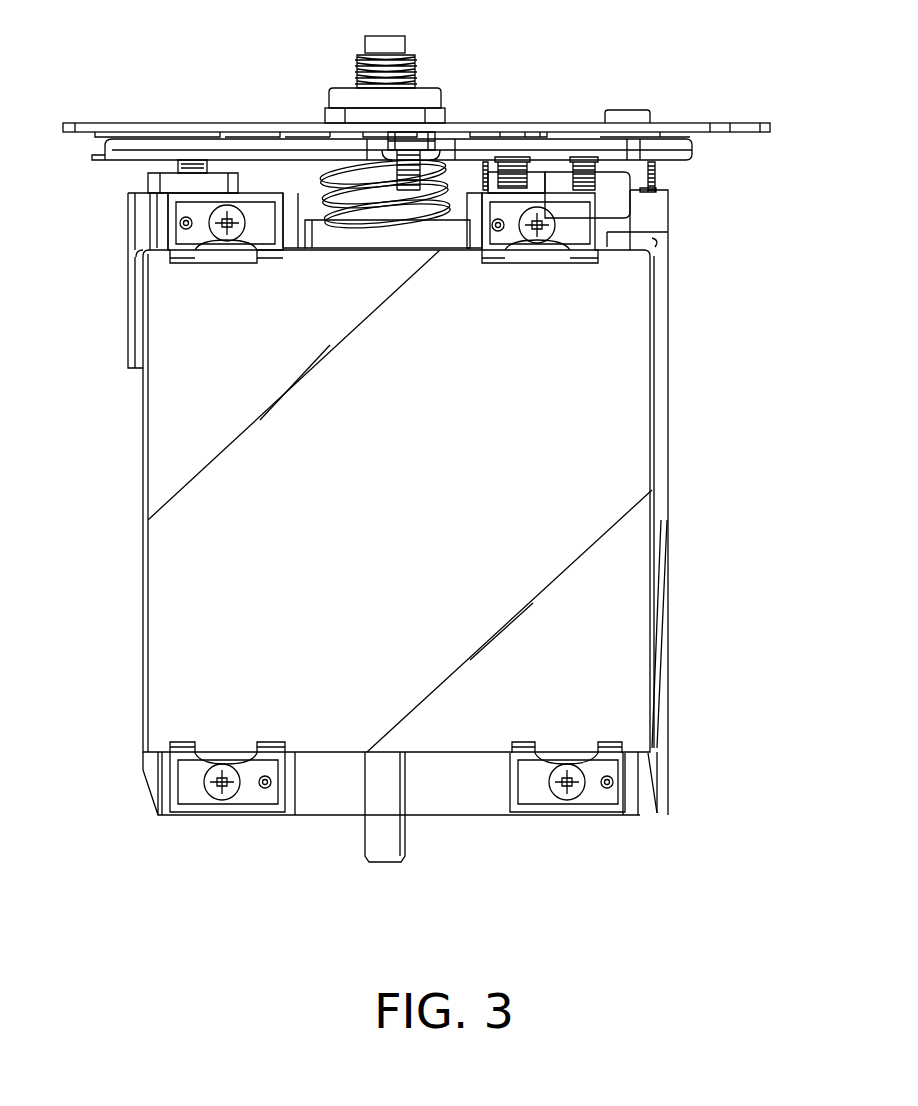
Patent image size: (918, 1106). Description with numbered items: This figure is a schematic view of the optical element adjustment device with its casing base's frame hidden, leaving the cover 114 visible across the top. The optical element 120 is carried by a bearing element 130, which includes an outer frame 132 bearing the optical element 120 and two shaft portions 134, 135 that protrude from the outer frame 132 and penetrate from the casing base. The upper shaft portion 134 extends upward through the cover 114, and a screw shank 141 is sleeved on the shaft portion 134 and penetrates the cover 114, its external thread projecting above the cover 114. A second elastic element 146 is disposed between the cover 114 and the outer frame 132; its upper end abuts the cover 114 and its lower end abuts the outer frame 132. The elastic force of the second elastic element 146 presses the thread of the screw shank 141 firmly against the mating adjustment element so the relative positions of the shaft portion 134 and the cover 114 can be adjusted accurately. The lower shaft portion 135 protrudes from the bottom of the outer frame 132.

The cover 114 is at (241, 128).
The optical element 120 is at (600, 603).
The bearing element 130 is at (803, 890).
The outer frame 132 is at (668, 430).
The shaft portion 134 is at (400, 44).
The shaft portion 135 is at (393, 838).
The screw shank 141 is at (415, 70).
The second elastic element 146 is at (443, 170).